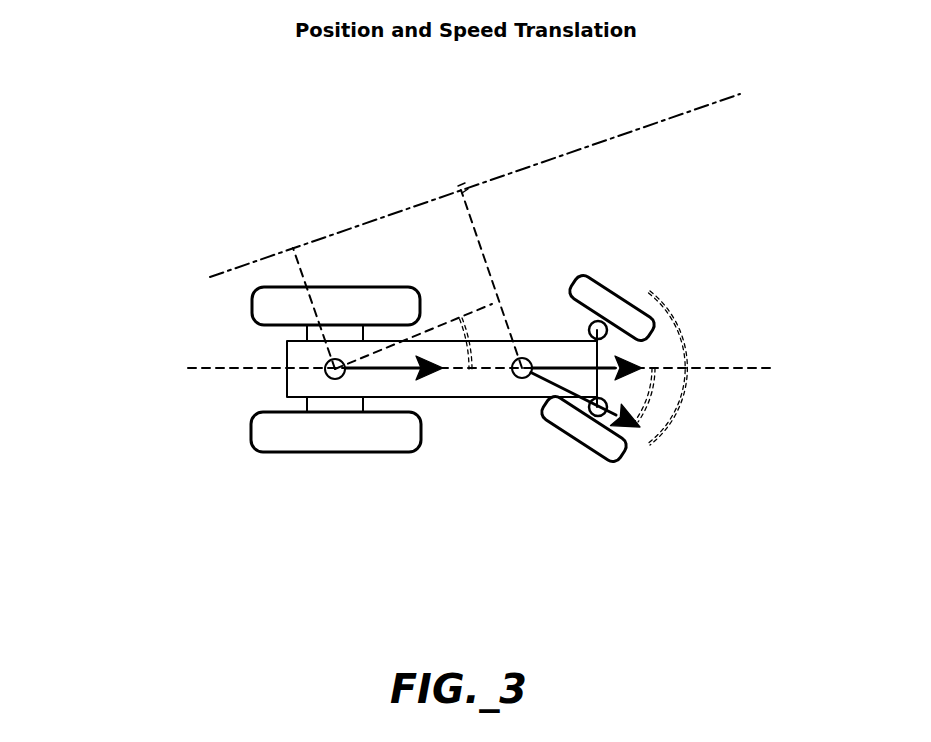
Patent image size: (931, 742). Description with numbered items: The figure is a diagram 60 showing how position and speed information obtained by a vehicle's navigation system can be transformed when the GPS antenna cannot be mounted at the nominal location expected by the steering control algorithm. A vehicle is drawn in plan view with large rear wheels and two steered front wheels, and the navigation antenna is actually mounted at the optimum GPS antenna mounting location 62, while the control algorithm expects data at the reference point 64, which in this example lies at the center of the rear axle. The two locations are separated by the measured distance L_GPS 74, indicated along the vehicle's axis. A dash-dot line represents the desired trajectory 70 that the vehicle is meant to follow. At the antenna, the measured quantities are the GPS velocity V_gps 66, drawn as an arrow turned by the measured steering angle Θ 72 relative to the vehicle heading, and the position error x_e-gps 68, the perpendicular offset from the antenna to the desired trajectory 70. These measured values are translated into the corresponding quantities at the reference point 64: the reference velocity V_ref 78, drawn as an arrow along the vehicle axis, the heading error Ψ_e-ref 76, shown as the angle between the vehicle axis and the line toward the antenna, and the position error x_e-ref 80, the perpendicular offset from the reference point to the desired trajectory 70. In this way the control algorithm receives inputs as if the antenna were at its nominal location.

The diagram 60 is at (231, 568).
The GPS antenna mounting location 62 is at (527, 357).
The reference point 64 is at (334, 358).
The velocity V_gps 66 is at (642, 436).
The position error x_e-gps 68 is at (483, 238).
The desired trajectory 70 is at (548, 157).
The steering angle Θ 72 is at (655, 376).
The distance L_GPS 74 is at (513, 367).
The heading error Ψ_e-ref 76 is at (484, 353).
The velocity V_ref 78 is at (441, 380).
The position error x_e-ref 80 is at (310, 334).